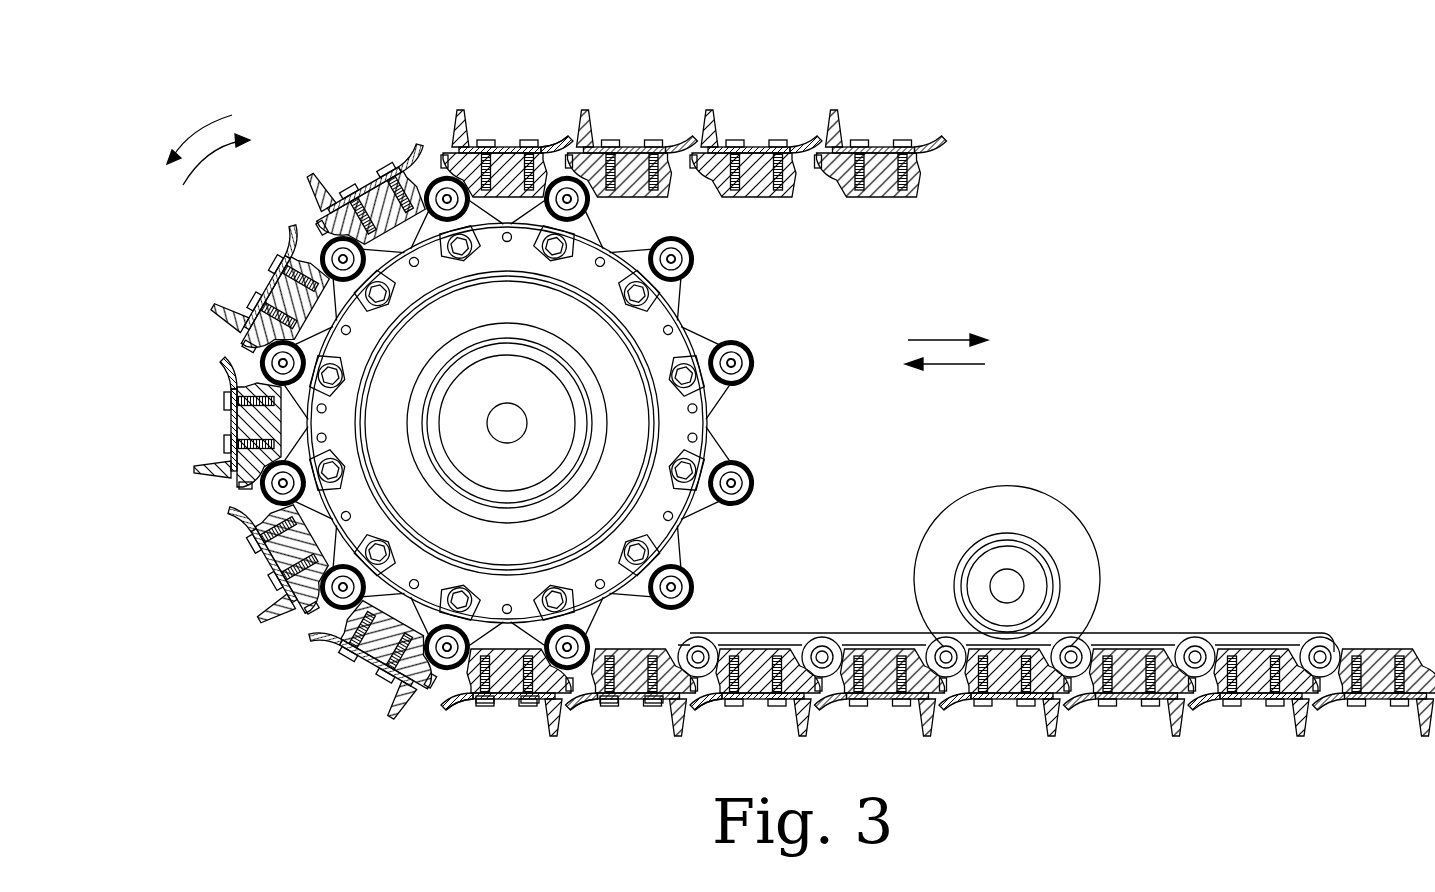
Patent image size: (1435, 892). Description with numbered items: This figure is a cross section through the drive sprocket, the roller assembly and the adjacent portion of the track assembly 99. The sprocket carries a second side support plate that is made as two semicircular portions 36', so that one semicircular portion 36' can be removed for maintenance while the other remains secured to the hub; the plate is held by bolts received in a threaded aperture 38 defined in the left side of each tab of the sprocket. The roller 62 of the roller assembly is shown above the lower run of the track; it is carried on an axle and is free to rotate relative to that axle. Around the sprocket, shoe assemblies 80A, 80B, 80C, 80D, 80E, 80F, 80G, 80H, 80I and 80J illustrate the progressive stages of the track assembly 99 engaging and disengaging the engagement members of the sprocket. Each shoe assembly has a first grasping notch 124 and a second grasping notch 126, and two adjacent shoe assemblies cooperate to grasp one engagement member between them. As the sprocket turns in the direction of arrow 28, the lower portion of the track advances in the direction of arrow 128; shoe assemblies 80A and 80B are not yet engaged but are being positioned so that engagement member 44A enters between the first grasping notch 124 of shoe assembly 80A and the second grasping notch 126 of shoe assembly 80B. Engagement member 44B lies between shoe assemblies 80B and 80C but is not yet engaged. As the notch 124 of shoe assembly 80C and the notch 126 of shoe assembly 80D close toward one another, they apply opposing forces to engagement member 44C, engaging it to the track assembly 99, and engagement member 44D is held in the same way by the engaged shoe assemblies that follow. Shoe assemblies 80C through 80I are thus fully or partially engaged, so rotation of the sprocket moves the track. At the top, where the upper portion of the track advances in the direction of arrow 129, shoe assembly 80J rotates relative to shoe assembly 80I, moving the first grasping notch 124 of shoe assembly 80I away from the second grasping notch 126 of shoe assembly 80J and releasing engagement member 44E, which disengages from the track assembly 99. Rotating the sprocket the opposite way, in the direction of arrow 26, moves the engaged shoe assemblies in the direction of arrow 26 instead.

The arrow 26 is at (205, 120).
The arrow 28 is at (200, 160).
The semi circular portion 36' is at (743, 423).
The threaded aperture 38 is at (685, 318).
The engagement member 44A is at (687, 580).
The engagement member 44B is at (585, 645).
The engagement member 44C is at (495, 575).
The engagement member 44D is at (412, 585).
The engagement member 44E is at (588, 205).
The roller 62 is at (1053, 527).
The shoe assembly 80A is at (768, 712).
The shoe assembly 80B is at (632, 718).
The shoe assembly 80C is at (510, 718).
The shoe assembly 80D is at (370, 672).
The shoe assembly 80E is at (275, 582).
The shoe assembly 80F is at (226, 425).
The shoe assembly 80G is at (256, 293).
The shoe assembly 80H is at (365, 180).
The shoe assembly 80I is at (498, 137).
The shoe assembly 80J is at (642, 137).
The track assembly 99 is at (1253, 712).
The first grasping notch 124 is at (566, 133).
The second grasping notch 126 is at (575, 146).
The arrow 128 is at (957, 366).
The arrow 129 is at (938, 338).